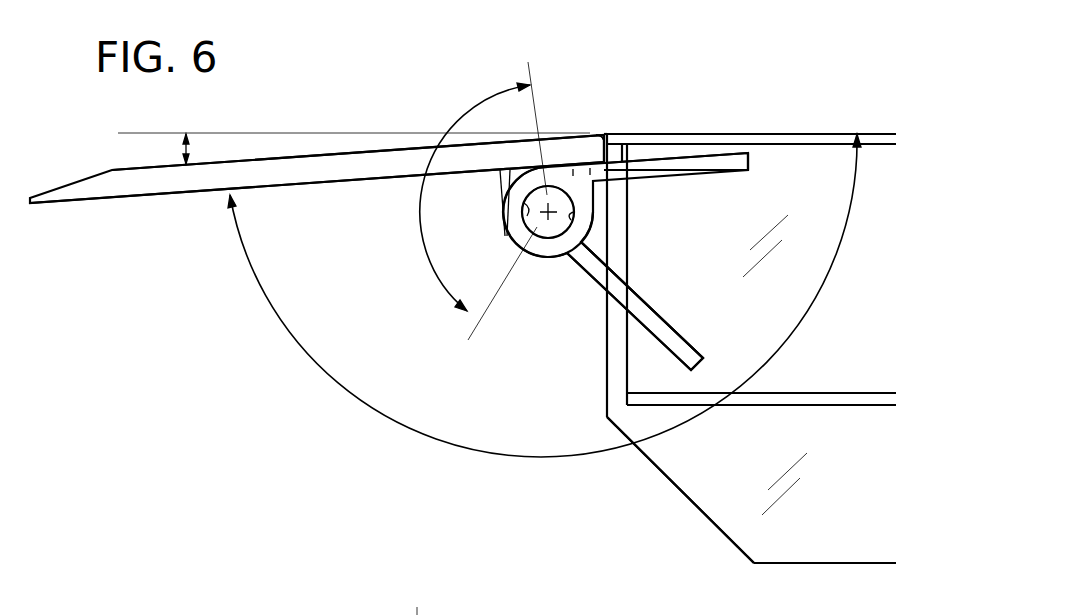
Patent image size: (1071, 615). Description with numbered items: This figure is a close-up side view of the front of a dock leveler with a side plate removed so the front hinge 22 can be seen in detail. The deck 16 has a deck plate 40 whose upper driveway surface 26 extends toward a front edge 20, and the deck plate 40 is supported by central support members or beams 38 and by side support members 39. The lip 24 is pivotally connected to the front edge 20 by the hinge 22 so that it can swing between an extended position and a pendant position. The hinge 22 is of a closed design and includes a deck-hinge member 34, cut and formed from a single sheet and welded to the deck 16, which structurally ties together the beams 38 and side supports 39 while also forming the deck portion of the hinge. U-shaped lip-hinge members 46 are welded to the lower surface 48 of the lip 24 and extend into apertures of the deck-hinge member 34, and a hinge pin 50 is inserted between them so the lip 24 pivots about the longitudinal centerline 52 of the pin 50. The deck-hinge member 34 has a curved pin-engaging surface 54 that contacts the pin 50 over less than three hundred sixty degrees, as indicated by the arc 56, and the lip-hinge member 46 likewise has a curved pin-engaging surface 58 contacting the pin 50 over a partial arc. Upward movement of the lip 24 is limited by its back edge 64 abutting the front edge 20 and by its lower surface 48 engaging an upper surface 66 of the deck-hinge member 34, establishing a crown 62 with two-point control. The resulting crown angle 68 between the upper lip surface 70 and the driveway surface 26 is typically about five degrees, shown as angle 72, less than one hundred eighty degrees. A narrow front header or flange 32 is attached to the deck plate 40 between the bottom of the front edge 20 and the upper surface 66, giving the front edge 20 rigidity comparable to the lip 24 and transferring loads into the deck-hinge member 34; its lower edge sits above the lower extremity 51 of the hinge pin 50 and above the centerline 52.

The deck 16 is at (697, 510).
The front edge 20 is at (598, 145).
The front hinge 22 is at (524, 384).
The lip 24 is at (338, 153).
The driveway surface 26 is at (770, 133).
The front header or flange 32 is at (630, 153).
The deck-hinge member 34 is at (566, 330).
The central support members or beams 38 is at (763, 407).
The side support members 39 is at (808, 527).
The deck plate 40 is at (800, 148).
The lip-hinge member 46 is at (594, 205).
The lower surface 48 is at (328, 200).
The hinge pin 50 is at (525, 197).
The lower extremity 51 is at (532, 302).
The longitudinal centerline 52 is at (549, 220).
The curved pin-engaging surface 54 is at (538, 228).
The arc 56 is at (458, 116).
The curved pin-engaging surface 58 is at (578, 228).
The crown 62 is at (610, 130).
The back edge 64 is at (645, 133).
The upper surface 66 is at (596, 144).
The crown angle 68 is at (292, 330).
The upper lip surface 70 is at (278, 157).
The angle 72 is at (180, 148).